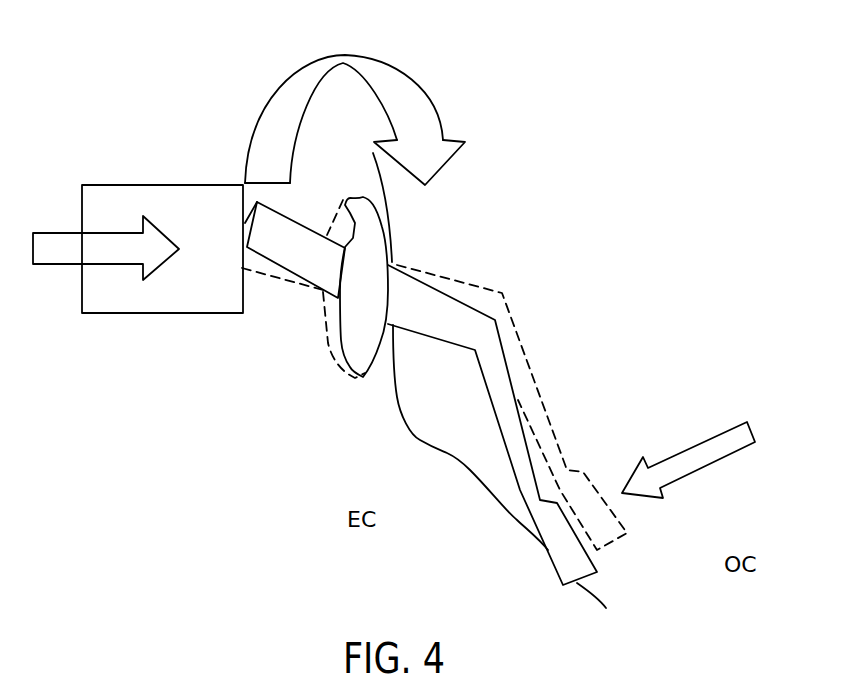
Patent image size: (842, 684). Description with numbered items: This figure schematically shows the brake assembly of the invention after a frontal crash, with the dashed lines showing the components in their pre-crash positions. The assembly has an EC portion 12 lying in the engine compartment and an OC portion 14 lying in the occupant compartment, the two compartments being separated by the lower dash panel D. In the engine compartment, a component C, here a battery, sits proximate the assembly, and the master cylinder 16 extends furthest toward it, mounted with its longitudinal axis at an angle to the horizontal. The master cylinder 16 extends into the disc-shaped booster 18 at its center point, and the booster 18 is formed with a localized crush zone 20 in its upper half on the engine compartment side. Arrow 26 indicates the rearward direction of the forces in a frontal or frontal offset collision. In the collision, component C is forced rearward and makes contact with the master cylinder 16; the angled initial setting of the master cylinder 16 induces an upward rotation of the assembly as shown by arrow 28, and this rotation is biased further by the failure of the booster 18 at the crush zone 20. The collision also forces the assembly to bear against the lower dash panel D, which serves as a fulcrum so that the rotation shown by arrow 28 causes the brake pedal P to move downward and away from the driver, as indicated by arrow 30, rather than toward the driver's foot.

The EC portion 12 is at (316, 418).
The OC portion 14 is at (560, 240).
The master cylinder 16 is at (285, 268).
The booster 18 is at (333, 348).
The crush zone 20 is at (341, 197).
The arrow 26 is at (55, 266).
The arrow 28 is at (278, 80).
The arrow 30 is at (727, 428).
The component C is at (121, 184).
The lower dash panel D is at (520, 525).
The brake pedal P is at (530, 448).